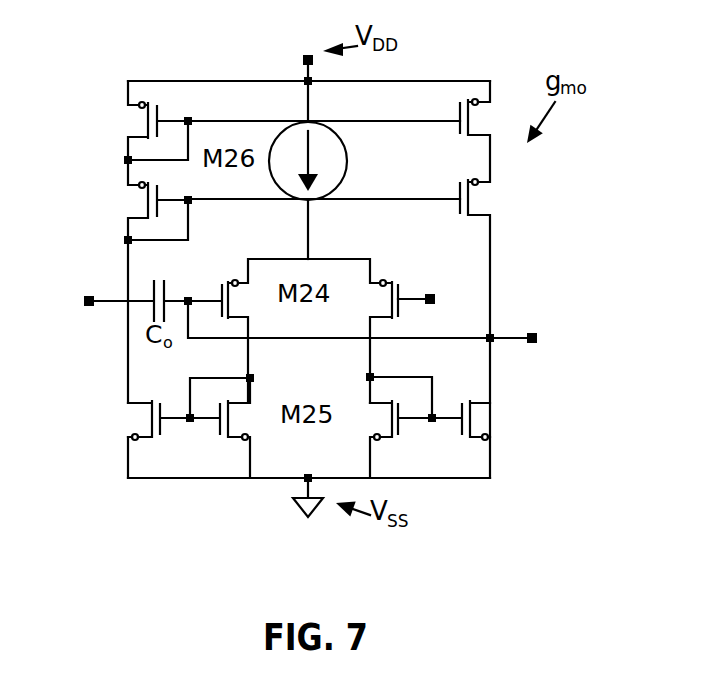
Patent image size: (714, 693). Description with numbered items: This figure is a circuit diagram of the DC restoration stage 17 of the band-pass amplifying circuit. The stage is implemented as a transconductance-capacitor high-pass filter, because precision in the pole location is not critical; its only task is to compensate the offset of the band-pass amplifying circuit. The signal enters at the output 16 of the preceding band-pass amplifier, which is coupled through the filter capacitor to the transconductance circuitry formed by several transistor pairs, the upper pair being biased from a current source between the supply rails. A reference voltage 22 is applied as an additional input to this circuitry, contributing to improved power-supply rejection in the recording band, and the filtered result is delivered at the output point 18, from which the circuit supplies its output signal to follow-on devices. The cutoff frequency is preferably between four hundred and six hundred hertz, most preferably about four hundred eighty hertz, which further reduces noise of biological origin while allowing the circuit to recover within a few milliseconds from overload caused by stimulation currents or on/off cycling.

The output of band-pass amplifier 16 is at (83, 268).
The DC restoration stage 17 is at (86, 126).
The output point 18 is at (532, 302).
The reference voltage 22 is at (422, 268).